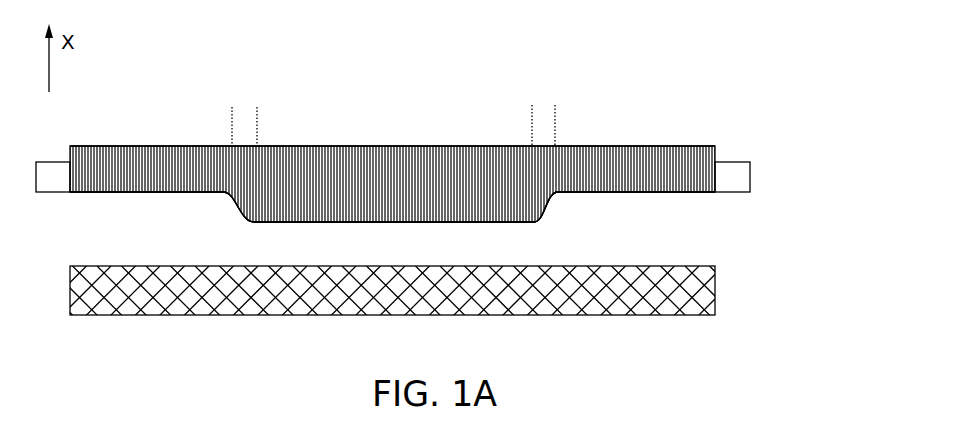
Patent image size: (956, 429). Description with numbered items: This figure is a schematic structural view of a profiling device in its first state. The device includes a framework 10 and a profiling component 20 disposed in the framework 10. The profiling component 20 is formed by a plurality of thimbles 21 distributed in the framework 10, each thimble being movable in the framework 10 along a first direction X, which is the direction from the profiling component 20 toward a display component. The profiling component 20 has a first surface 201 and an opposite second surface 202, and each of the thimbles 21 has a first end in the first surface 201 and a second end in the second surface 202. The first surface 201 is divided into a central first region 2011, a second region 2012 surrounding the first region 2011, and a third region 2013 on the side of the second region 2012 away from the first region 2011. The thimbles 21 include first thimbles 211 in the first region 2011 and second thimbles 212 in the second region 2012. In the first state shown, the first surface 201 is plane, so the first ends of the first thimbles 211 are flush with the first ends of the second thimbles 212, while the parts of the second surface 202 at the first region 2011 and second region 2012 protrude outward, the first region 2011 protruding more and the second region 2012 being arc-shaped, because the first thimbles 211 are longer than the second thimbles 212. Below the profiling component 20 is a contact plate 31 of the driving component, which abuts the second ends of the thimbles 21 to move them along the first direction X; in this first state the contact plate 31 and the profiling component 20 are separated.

The framework 10 is at (733, 160).
The profiling component 20 is at (717, 150).
The thimbles 21 is at (690, 153).
The first surface 201 is at (138, 147).
The second surface 202 is at (145, 192).
The first region 2011 is at (382, 122).
The second region 2012 is at (538, 108).
The third region 2013 is at (595, 112).
The first thimbles 211 is at (397, 212).
The second thimbles 212 is at (544, 212).
The contact plate 31 is at (715, 290).